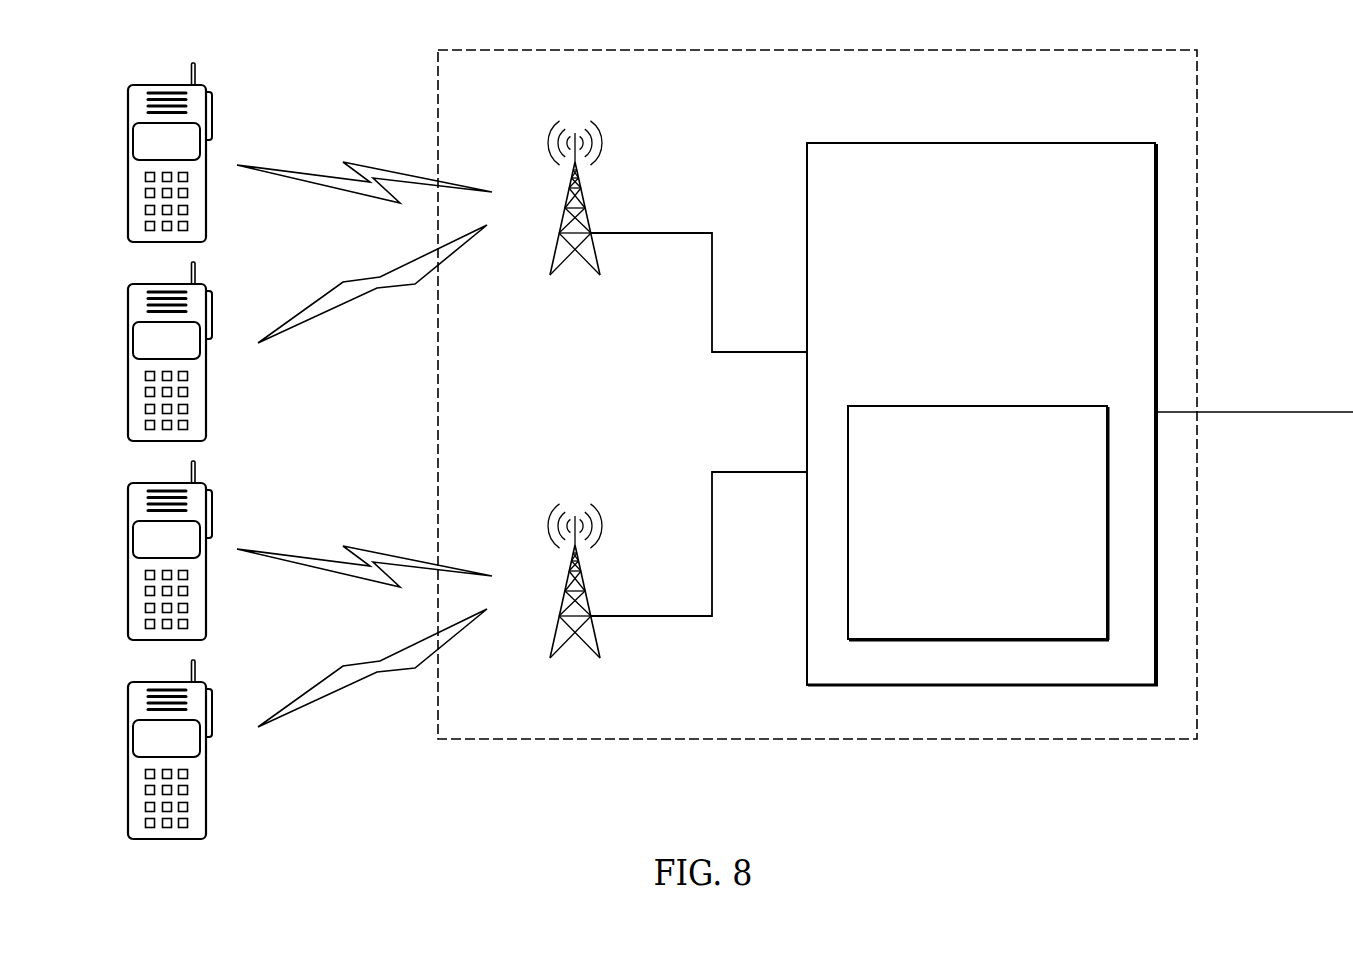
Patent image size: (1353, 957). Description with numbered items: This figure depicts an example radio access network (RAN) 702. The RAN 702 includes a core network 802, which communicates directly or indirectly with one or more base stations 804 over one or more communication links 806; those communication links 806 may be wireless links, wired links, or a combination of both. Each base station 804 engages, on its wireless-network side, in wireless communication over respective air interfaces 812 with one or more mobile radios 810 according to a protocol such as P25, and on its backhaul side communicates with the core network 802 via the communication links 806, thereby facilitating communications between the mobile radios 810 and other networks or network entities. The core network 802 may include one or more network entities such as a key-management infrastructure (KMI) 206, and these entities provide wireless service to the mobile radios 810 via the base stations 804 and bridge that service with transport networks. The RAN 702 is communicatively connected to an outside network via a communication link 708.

The radio access network 702 is at (438, 92).
The core network 802 is at (978, 143).
The key-management infrastructure 206 is at (980, 406).
The communication link 708 is at (1252, 412).
The base station 804 is at (576, 130).
The communication link 806 is at (712, 294).
The mobile radio 810 is at (128, 165).
The air interface 812 is at (303, 172).